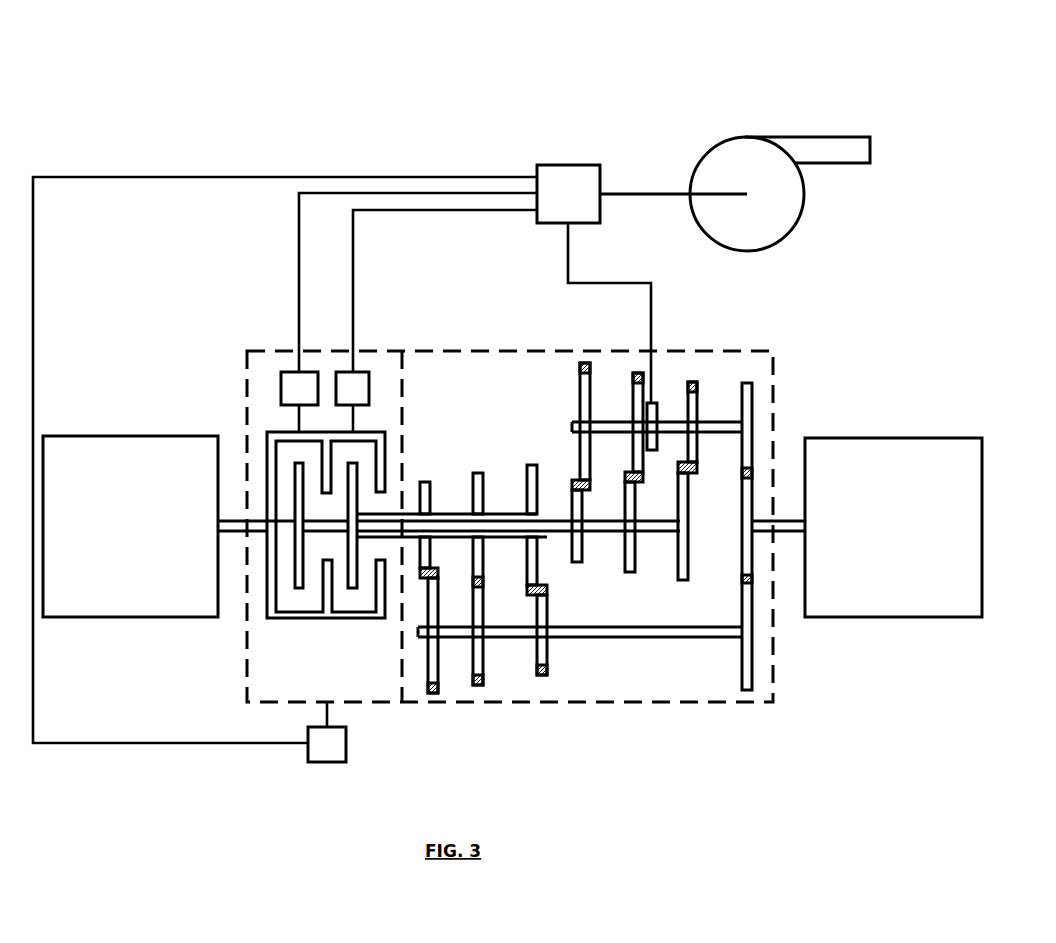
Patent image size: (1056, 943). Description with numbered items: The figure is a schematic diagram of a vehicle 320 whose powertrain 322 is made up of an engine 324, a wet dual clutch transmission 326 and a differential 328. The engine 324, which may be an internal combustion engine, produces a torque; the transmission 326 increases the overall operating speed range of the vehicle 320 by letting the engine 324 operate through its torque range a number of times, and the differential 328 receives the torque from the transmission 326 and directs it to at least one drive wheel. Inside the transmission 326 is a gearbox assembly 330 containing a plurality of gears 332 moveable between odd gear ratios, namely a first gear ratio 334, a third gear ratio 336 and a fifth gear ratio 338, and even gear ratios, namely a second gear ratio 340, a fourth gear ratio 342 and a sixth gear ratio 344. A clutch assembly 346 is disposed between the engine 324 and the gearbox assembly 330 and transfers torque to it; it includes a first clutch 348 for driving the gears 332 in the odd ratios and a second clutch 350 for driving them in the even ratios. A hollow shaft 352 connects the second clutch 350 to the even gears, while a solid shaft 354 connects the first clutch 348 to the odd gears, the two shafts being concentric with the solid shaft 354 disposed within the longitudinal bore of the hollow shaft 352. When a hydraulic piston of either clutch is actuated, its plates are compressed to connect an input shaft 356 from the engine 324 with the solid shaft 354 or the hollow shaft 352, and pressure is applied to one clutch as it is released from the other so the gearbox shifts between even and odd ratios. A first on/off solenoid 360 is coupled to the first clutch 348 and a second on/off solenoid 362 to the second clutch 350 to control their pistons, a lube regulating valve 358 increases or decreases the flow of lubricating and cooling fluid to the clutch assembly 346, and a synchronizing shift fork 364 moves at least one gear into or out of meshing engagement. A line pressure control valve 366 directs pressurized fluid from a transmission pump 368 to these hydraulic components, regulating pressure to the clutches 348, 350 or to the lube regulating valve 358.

The vehicle 320 is at (934, 98).
The powertrain 322 is at (622, 770).
The engine 324 is at (128, 436).
The wet dual clutch transmission 326 is at (755, 338).
The differential 328 is at (878, 438).
The gearbox assembly 330 is at (455, 350).
The plurality of gears 332 is at (603, 597).
The first gear ratio 334 is at (580, 400).
The third gear ratio 336 is at (632, 393).
The fifth gear ratio 338 is at (700, 395).
The second gear ratio 340 is at (428, 673).
The fourth gear ratio 342 is at (483, 667).
The sixth gear ratio 344 is at (547, 667).
The clutch assembly 346 is at (243, 382).
The first clutch 348 is at (283, 605).
The second clutch 350 is at (348, 605).
The hollow shaft 352 is at (442, 512).
The solid shaft 354 is at (327, 530).
The input shaft 356 is at (235, 521).
The lube regulating valve 358 is at (320, 762).
The first on/off solenoid 360 is at (288, 372).
The second on/off solenoid 362 is at (358, 372).
The synchronizing shift fork 364 is at (657, 402).
The line pressure control valve 366 is at (575, 165).
The transmission pump 368 is at (797, 220).